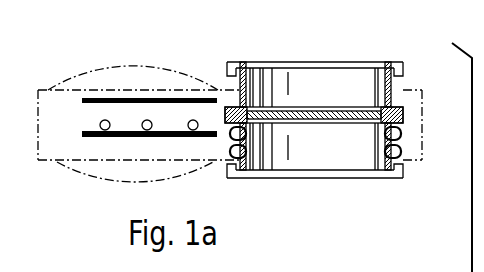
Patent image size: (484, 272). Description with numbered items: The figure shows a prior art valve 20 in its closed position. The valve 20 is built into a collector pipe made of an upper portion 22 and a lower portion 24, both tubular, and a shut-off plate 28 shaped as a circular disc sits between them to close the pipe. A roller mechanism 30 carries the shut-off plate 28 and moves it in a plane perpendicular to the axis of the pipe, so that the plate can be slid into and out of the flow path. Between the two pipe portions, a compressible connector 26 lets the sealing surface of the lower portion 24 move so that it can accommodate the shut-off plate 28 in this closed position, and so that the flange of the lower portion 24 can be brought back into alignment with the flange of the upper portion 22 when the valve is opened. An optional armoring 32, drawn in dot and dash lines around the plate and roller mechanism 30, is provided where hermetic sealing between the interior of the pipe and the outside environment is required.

The valve 20 is at (110, 58).
The upper portion 22 is at (324, 67).
The lower portion 24 is at (305, 174).
The compressible connector 26 is at (403, 152).
The shut-off plate 28 is at (402, 117).
The roller mechanism 30 is at (137, 100).
The armoring 32 is at (100, 180).